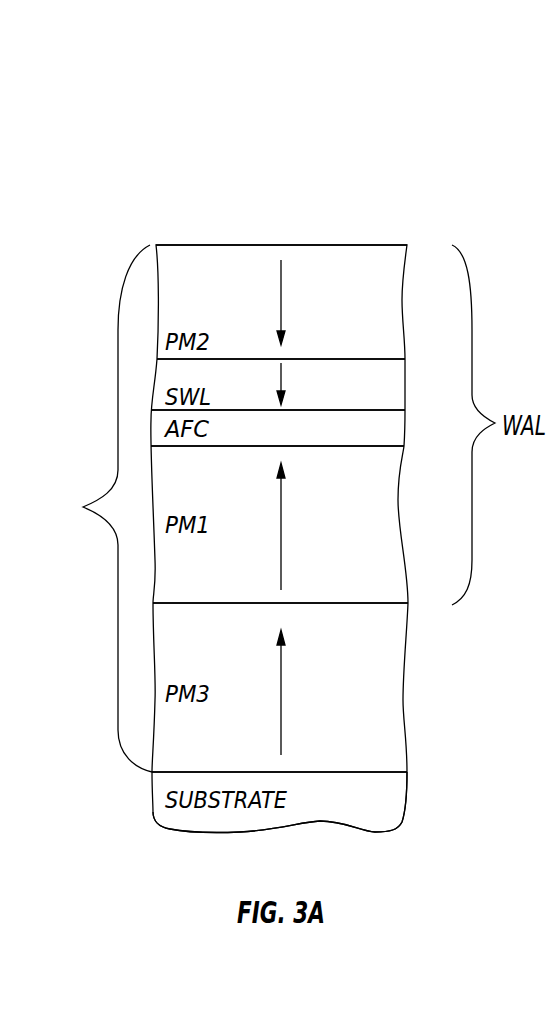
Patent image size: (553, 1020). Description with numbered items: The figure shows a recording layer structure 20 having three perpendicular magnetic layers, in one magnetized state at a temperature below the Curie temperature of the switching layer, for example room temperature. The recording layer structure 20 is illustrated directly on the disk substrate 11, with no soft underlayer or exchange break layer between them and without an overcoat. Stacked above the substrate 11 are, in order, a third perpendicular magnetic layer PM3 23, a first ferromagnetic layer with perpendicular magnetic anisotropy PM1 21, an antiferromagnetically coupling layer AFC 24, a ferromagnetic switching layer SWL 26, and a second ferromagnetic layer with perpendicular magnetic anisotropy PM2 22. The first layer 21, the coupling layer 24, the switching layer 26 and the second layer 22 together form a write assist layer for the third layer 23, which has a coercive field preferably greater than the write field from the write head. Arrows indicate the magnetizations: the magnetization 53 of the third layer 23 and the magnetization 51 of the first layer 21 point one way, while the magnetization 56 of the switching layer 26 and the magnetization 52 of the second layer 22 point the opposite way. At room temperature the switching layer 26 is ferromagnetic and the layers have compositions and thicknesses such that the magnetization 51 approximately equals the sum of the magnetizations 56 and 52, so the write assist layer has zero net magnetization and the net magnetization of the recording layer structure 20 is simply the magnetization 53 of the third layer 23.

The substrate 11 is at (398, 803).
The recording layer structure 20 is at (97, 508).
The first ferromagnetic layer with perpendicular magnetic anisotropy 21 is at (390, 520).
The second ferromagnetic layer with perpendicular magnetic anisotropy 22 is at (393, 301).
The third perpendicular magnetic layer 23 is at (393, 668).
The antiferromagnetically coupling layer 24 is at (397, 430).
The ferromagnetic switching layer 26 is at (393, 383).
The magnetization of PM1 51 is at (283, 508).
The magnetization of PM2 52 is at (282, 300).
The magnetization of PM3 53 is at (283, 677).
The magnetization of SWL 56 is at (282, 389).